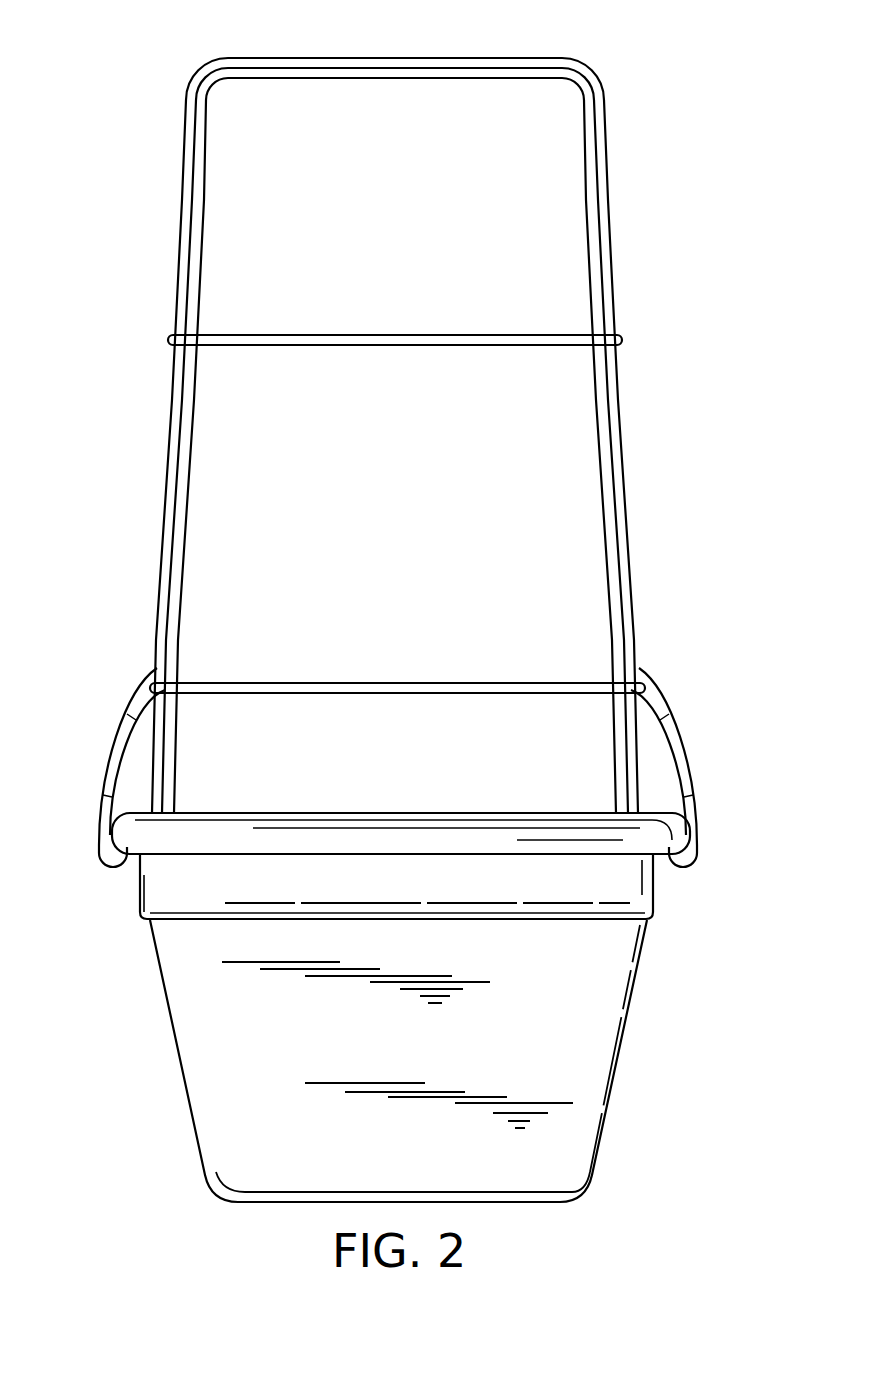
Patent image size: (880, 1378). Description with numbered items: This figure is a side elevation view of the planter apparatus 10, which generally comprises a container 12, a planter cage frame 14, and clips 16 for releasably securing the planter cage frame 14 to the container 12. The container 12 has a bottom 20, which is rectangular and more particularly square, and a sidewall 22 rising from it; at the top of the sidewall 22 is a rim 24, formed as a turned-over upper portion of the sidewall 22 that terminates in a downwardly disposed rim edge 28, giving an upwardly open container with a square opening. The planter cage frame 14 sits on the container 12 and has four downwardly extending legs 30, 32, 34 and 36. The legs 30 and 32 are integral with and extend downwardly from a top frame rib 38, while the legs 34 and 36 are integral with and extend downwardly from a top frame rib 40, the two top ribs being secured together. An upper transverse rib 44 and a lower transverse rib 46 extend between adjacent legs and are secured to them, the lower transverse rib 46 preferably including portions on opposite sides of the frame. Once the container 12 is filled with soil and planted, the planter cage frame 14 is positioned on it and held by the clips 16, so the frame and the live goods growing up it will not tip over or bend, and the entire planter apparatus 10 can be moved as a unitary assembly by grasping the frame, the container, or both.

The planter apparatus 10 is at (105, 115).
The container 12 is at (668, 1014).
The planter cage frame 14 is at (630, 145).
The clips 16 is at (115, 735).
The bottom 20 is at (255, 1205).
The sidewall 22 is at (170, 1012).
The rim 24 is at (287, 813).
The rim edge 28 is at (433, 855).
The downwardly extending leg 30 is at (585, 252).
The downwardly extending leg 32 is at (205, 195).
The downwardly extending leg 34 is at (612, 208).
The downwardly extending leg 36 is at (178, 252).
The top frame rib 38 is at (450, 80).
The top frame rib 40 is at (445, 58).
The upper transverse rib 44 is at (385, 335).
The lower transverse rib 46 is at (368, 683).